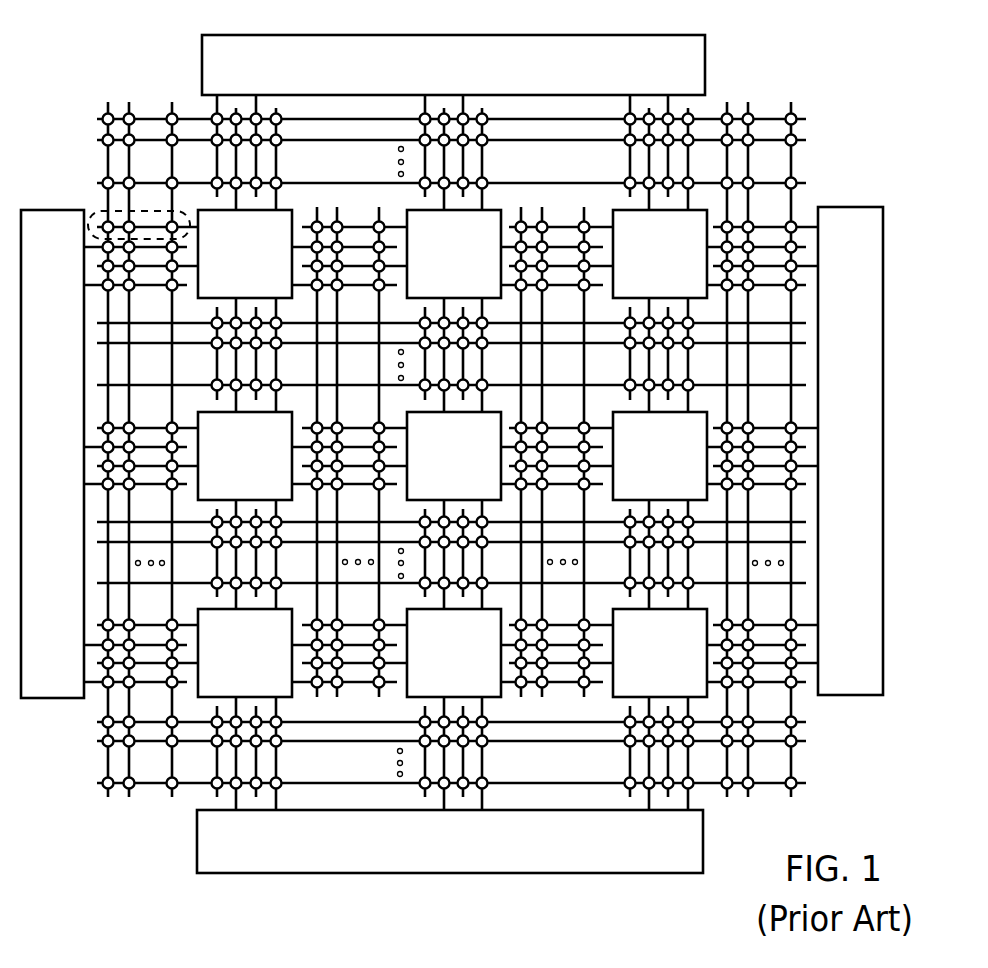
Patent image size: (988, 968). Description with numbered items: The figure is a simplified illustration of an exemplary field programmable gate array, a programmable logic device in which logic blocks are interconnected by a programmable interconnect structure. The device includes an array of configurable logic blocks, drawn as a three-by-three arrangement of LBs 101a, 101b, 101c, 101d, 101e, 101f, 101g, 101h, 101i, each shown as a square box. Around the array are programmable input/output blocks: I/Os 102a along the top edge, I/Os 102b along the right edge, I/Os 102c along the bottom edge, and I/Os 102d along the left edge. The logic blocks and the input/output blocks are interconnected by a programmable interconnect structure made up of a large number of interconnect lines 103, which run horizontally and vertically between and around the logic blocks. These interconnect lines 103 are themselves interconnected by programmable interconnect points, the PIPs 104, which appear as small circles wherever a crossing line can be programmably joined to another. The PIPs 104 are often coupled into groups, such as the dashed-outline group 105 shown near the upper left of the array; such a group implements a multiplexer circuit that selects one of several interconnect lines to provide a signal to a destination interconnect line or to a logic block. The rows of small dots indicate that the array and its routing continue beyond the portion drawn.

The configurable logic block 101a is at (218, 282).
The configurable logic block 101b is at (427, 282).
The configurable logic block 101c is at (633, 282).
The configurable logic block 101d is at (218, 484).
The configurable logic block 101e is at (427, 484).
The configurable logic block 101f is at (633, 484).
The configurable logic block 101g is at (218, 681).
The configurable logic block 101h is at (427, 681).
The configurable logic block 101i is at (633, 681).
The programmable input/output block 102a is at (432, 92).
The programmable input/output block 102b is at (823, 476).
The programmable input/output block 102c is at (484, 866).
The programmable input/output block 102d is at (25, 476).
The interconnect lines 103 is at (170, 160).
The programmable interconnect points 104 is at (729, 110).
The group of programmable interconnect points 105 is at (98, 210).